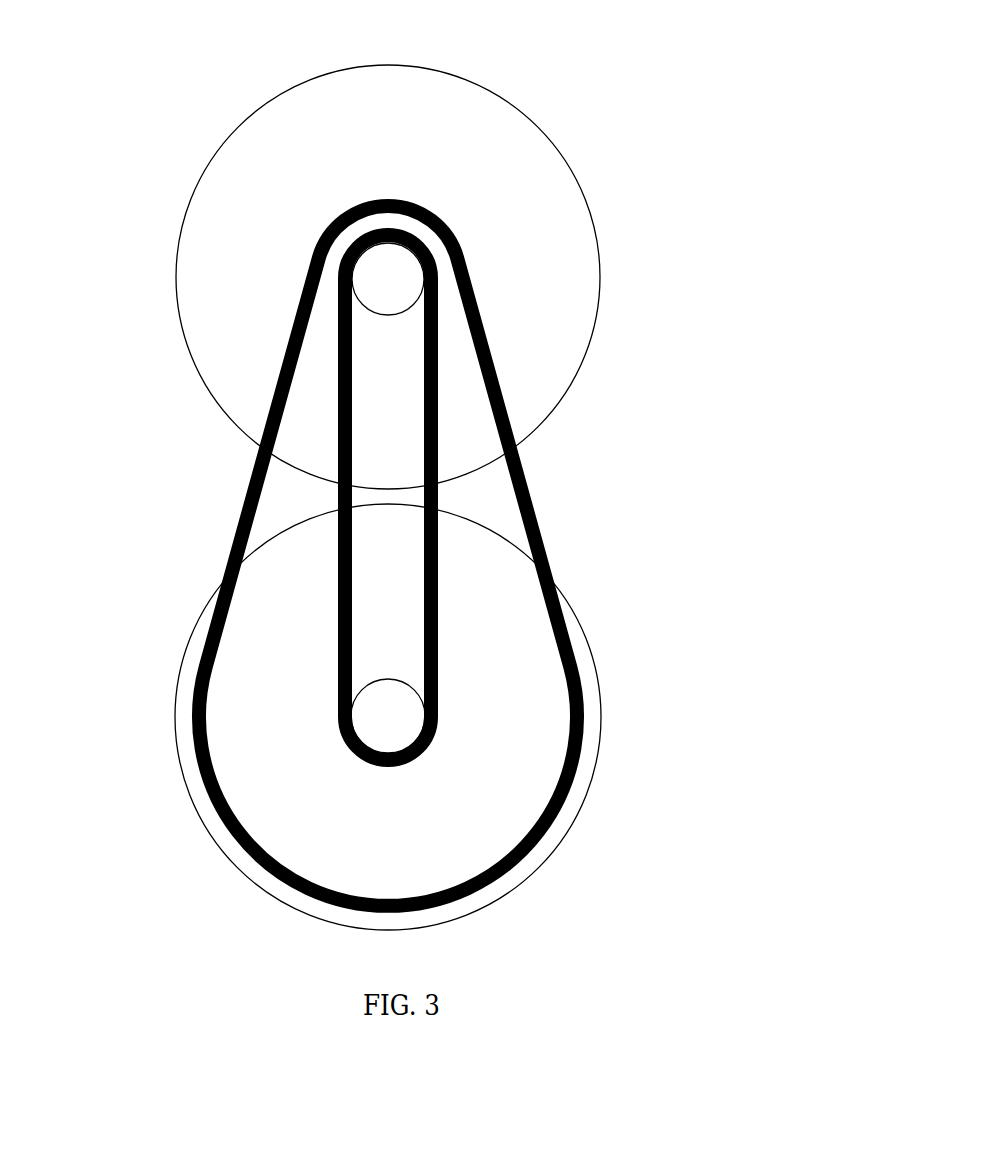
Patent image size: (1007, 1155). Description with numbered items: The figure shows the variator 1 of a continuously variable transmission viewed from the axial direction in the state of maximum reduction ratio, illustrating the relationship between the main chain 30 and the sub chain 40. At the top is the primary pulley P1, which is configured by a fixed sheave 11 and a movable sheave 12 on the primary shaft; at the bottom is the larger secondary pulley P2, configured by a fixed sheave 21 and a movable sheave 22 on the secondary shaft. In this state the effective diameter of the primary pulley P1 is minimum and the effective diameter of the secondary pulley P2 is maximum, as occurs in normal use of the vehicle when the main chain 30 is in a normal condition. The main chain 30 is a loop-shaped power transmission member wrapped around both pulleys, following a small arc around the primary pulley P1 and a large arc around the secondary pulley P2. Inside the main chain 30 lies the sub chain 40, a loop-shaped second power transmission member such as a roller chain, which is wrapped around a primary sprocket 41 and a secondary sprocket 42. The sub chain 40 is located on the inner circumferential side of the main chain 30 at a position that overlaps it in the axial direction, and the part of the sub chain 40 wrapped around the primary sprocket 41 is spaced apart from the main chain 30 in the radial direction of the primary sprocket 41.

The variator 1 is at (188, 130).
The primary pulley P1 is at (416, 249).
The fixed sheave 11 is at (416, 249).
The movable sheave 12 is at (543, 137).
The secondary pulley P2 is at (416, 726).
The fixed sheave 21 is at (416, 726).
The movable sheave 22 is at (562, 842).
The main chain 30 is at (252, 475).
The sub chain 40 is at (440, 470).
The primary sprocket 41 is at (410, 280).
The secondary sprocket 42 is at (403, 713).